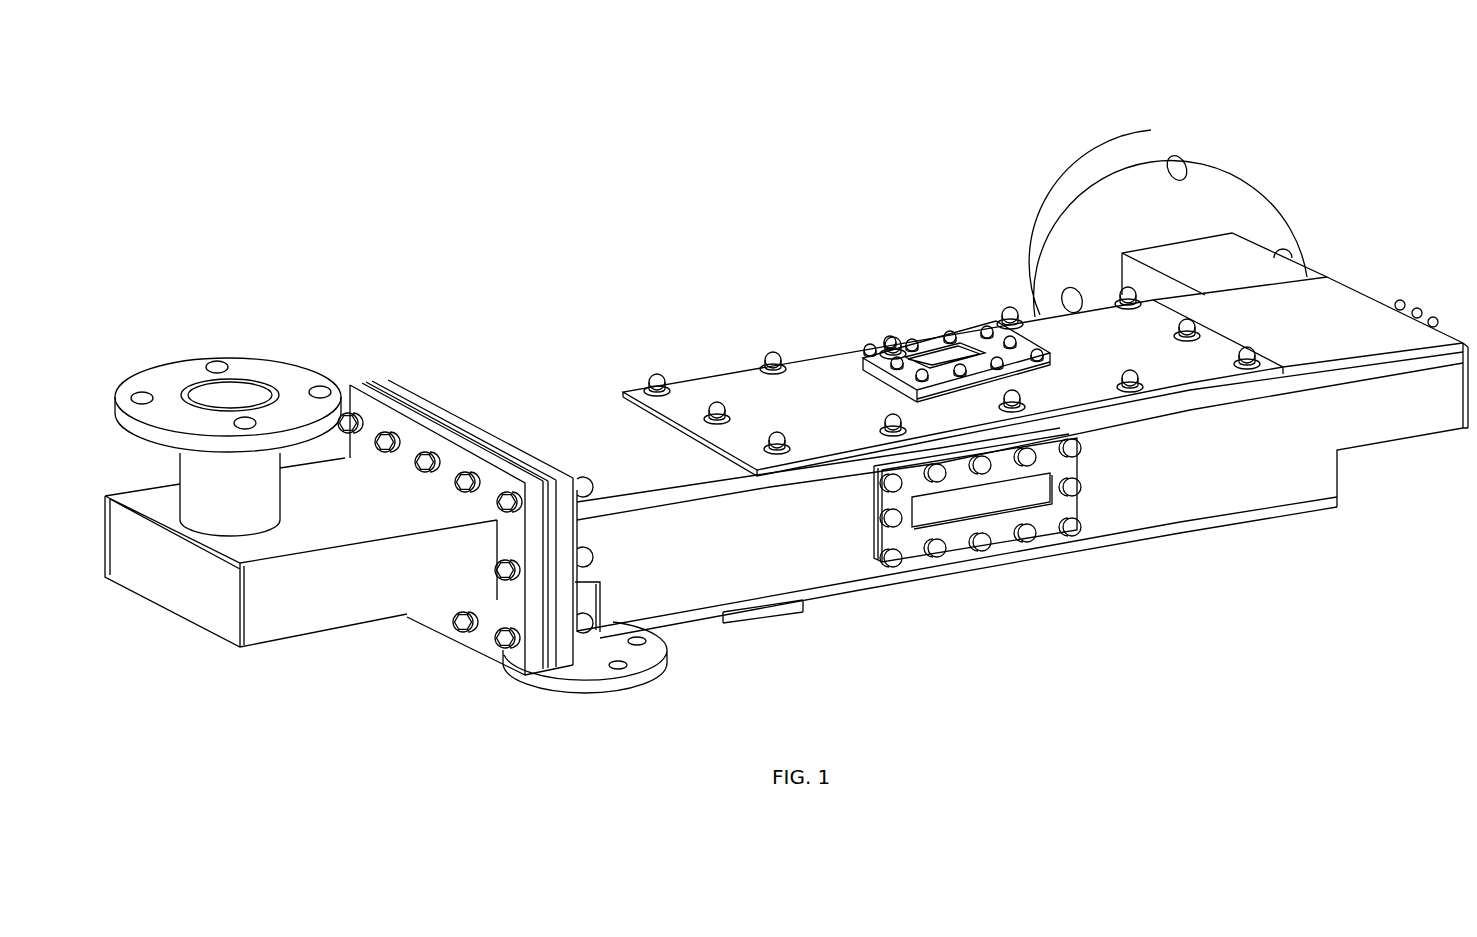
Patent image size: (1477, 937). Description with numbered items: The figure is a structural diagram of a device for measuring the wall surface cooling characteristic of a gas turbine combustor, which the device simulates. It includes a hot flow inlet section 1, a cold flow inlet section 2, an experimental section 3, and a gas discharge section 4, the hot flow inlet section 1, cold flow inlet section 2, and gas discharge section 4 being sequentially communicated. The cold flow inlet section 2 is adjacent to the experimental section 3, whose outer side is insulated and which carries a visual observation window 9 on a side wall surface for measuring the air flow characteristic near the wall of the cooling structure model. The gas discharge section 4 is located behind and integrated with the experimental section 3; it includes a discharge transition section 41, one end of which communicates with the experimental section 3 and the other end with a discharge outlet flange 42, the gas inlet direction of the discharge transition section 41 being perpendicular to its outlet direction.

The hot flow inlet section 1 is at (208, 494).
The cold flow inlet section 2 is at (597, 642).
The experimental section 3 is at (632, 438).
The gas discharge section 4 is at (1340, 317).
The discharge transition section 41 is at (1245, 268).
The discharge outlet flange 42 is at (1142, 175).
The visual observation window 9 is at (990, 502).